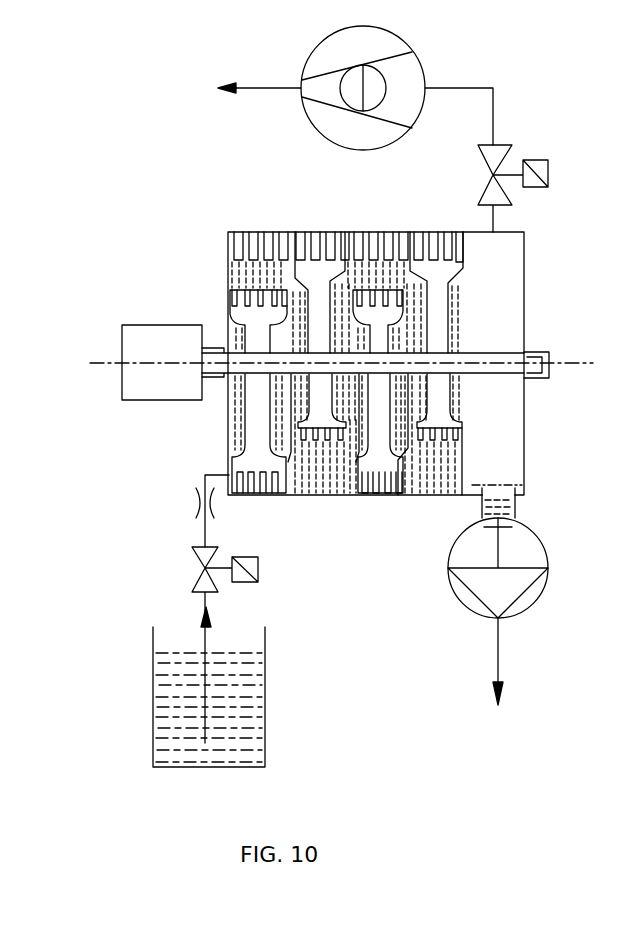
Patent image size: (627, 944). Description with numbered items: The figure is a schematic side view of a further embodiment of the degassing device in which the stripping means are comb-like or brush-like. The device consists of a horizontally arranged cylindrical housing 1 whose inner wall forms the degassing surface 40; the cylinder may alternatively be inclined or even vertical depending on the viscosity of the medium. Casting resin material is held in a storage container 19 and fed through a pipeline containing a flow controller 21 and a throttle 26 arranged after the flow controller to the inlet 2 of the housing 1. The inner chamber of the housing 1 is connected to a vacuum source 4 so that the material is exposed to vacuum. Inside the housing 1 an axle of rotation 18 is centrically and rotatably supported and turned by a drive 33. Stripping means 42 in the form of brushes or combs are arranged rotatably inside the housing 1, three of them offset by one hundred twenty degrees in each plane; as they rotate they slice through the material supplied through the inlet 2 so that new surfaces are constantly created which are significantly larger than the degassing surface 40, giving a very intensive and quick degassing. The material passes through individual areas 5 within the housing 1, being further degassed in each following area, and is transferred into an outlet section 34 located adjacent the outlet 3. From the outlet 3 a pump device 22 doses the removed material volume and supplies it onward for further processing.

The housing 1 is at (525, 290).
The inlet 2 is at (207, 473).
The outlet 3 is at (513, 503).
The vacuum source 4 is at (310, 120).
The areas 5 is at (316, 496).
The axle of rotation 18 is at (505, 353).
The storage container 19 is at (153, 703).
The flow controller 21 is at (197, 580).
The pump device 22 is at (547, 587).
The throttle 26 is at (208, 505).
The drive 33 is at (128, 380).
The outlet section 34 is at (505, 487).
The degassing surface 40 is at (285, 231).
The stripping means 42 is at (455, 269).